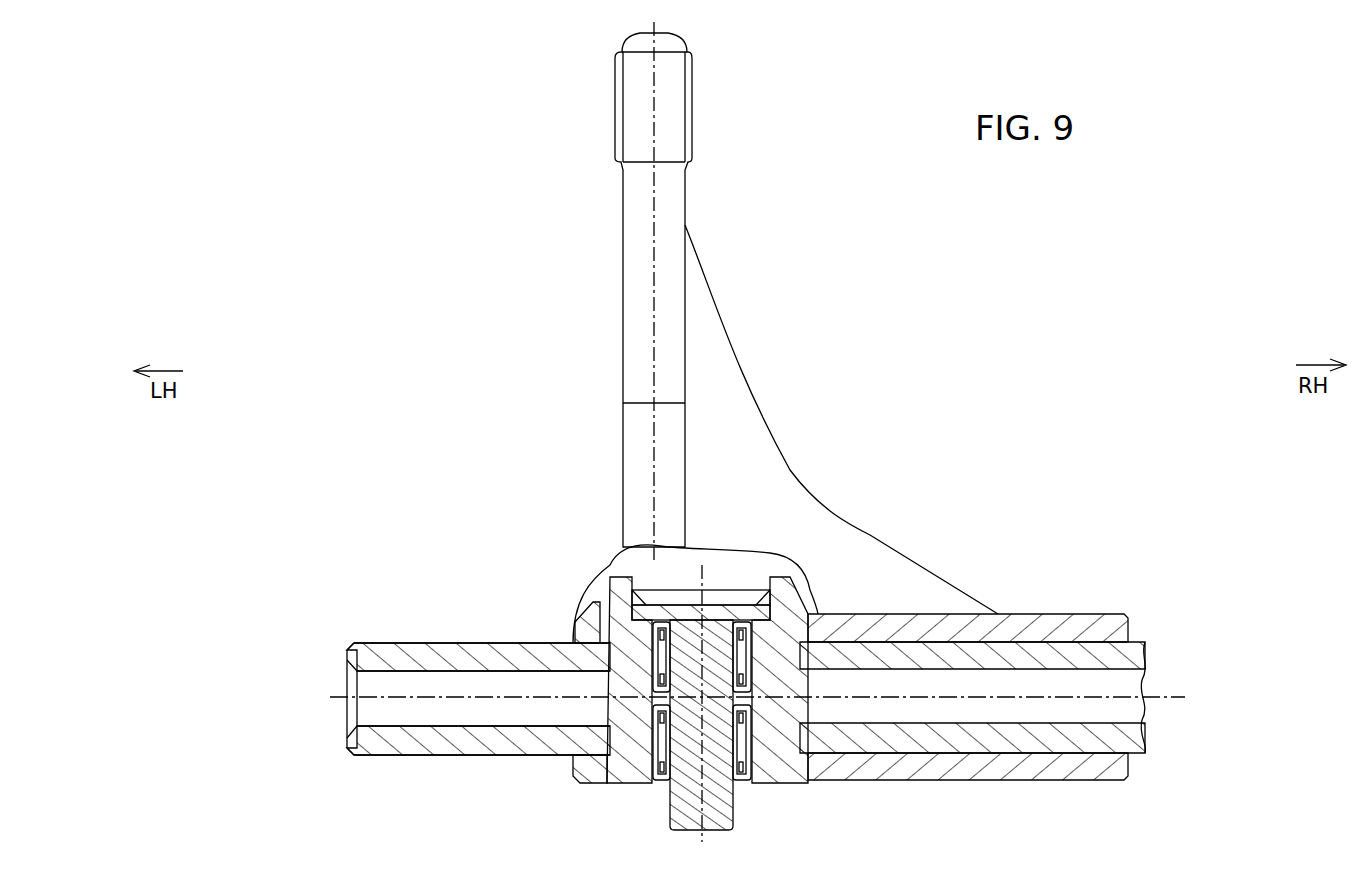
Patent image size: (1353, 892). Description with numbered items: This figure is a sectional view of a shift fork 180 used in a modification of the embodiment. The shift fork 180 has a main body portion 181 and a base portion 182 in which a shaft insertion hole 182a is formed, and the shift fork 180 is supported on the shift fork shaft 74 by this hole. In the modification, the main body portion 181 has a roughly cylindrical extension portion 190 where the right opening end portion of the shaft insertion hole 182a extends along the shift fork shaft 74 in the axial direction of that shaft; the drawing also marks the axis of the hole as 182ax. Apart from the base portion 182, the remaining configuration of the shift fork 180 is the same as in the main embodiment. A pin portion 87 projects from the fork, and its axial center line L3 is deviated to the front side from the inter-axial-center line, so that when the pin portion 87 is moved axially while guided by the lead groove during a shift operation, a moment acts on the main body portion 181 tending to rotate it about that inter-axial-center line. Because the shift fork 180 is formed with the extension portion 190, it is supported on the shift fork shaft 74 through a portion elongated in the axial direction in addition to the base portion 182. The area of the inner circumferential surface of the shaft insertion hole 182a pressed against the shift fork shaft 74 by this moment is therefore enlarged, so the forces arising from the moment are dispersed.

The shift fork 180 is at (474, 355).
The main body portion 181 is at (846, 471).
The base portion 182 is at (590, 616).
The shaft insertion hole 182a is at (560, 645).
The pivot axis of pivot boss 182ax is at (1173, 699).
The extension portion 190 is at (1040, 614).
The shift fork shaft 74 is at (1148, 655).
The pin portion 87 is at (722, 813).
The axial center line of the pin portion L3 is at (702, 577).